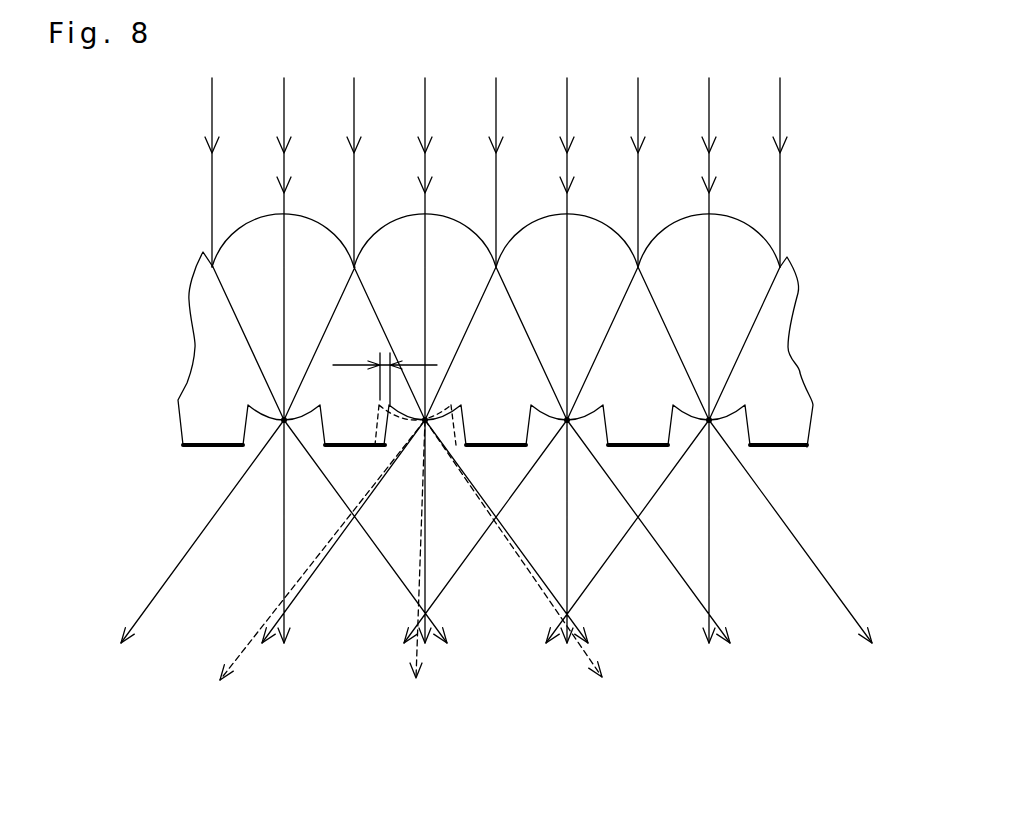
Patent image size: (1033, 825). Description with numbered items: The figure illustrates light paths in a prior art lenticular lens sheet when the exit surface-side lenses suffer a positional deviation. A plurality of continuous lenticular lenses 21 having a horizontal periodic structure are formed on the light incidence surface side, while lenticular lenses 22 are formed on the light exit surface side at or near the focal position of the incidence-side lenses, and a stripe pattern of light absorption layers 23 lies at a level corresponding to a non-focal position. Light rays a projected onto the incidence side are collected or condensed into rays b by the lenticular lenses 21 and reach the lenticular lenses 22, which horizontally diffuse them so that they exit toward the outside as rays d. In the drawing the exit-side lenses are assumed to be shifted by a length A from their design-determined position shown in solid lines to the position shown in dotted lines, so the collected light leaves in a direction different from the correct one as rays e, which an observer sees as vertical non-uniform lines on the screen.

The lenticular lenses 21 is at (732, 245).
The lenticular lenses 22 is at (738, 447).
The light absorption layers 23 is at (790, 445).
The light rays a is at (427, 107).
The rays b is at (482, 298).
The rays d is at (312, 582).
The rays e is at (237, 662).
The length A is at (385, 369).